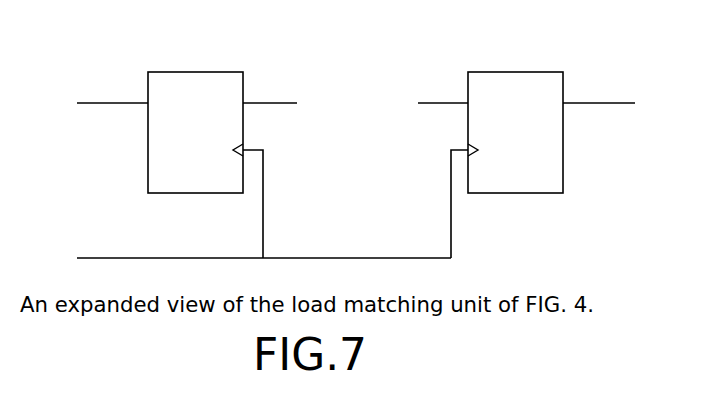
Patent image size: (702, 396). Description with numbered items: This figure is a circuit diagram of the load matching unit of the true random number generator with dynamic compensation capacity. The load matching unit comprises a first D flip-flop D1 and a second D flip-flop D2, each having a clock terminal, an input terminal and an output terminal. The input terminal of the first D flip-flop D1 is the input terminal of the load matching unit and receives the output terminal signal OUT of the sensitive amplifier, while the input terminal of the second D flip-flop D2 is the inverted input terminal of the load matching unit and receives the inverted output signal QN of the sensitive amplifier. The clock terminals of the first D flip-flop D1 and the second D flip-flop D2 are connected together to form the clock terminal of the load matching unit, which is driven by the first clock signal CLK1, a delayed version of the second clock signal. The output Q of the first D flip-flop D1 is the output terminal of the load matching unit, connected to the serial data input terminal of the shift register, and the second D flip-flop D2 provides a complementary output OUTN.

The first D flip-flop D1 is at (195, 151).
The second D flip-flop D2 is at (515, 151).
The output terminal of the sensitive amplifier OUT is at (112, 89).
The output terminal of the load matching unit Q is at (270, 89).
The inverted output terminal of the sensitive amplifier QN is at (443, 89).
The output terminal of the second D flip-flop OUTN is at (599, 89).
The first clock signal CLK1 is at (272, 204).